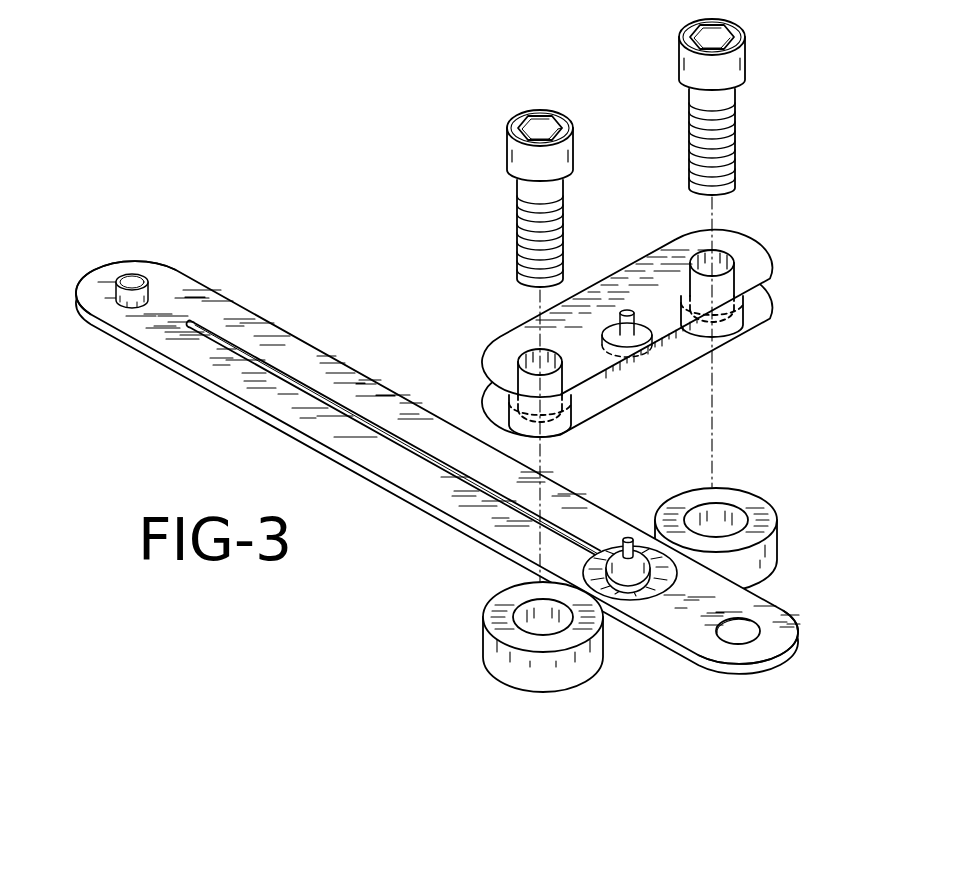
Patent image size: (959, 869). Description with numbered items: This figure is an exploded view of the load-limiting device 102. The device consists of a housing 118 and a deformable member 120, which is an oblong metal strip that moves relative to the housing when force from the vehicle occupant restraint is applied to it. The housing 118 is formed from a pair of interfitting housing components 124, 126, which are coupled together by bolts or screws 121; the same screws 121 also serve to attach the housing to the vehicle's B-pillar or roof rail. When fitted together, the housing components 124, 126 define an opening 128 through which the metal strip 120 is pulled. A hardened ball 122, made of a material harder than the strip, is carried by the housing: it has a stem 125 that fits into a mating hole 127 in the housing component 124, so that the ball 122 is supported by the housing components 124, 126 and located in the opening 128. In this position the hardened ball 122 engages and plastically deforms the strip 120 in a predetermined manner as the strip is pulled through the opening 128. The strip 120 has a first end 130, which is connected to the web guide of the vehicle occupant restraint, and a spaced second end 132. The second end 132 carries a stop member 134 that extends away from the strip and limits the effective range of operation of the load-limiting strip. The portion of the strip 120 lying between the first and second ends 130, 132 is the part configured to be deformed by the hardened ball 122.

The load-limiting device 102 is at (397, 199).
The housing 118 is at (770, 220).
The deformable member 120 is at (431, 461).
The bolts or screws 121 is at (512, 152).
The hardened ball 122 is at (619, 522).
The housing component 124 is at (771, 313).
The stem 125 is at (629, 538).
The housing component 126 is at (770, 503).
The mating hole 127 is at (626, 310).
The opening 128 is at (616, 628).
The first end 130 is at (781, 649).
The second end 132 is at (73, 270).
The stop member 134 is at (135, 281).